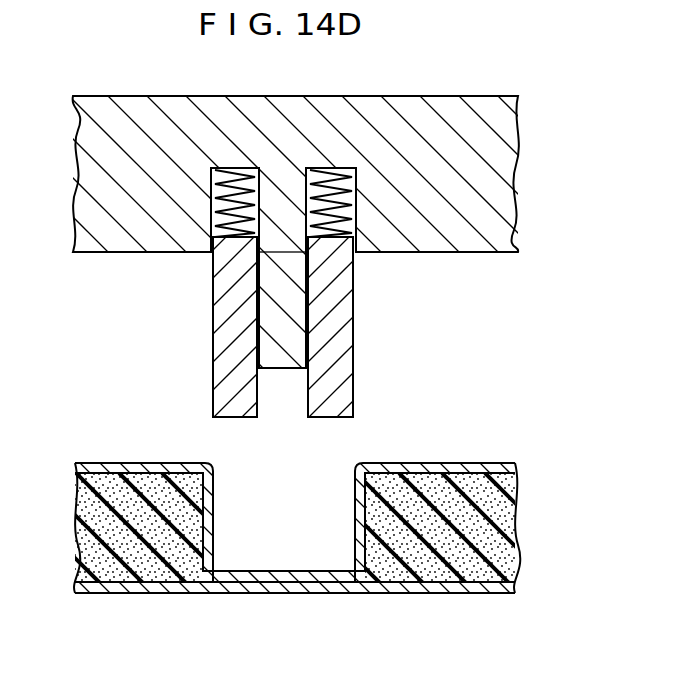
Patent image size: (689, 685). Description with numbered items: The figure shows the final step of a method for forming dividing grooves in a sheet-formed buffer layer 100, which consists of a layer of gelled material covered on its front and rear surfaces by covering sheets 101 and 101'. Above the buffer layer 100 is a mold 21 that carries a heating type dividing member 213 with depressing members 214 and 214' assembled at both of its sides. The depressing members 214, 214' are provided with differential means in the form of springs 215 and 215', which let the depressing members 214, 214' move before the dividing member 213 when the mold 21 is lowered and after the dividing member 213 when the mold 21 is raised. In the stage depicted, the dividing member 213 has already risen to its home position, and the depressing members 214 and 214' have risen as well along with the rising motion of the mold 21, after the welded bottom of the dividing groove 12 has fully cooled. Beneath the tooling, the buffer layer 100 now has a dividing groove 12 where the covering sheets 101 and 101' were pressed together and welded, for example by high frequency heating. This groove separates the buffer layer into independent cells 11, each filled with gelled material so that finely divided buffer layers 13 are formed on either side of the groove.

The mold 21 is at (498, 201).
The heating type dividing member 213 is at (295, 350).
The depressing member 214 is at (197, 340).
The depressing member 214' is at (372, 339).
The spring 215 is at (226, 144).
The spring 215' is at (340, 141).
The sheet-formed buffer layer 100 is at (325, 524).
The independent cell 11 is at (118, 456).
The covering sheet 101 is at (439, 437).
The covering sheet 101' is at (295, 618).
The dividing groove 12 is at (305, 568).
The finely divided buffer layer 13 is at (105, 554).